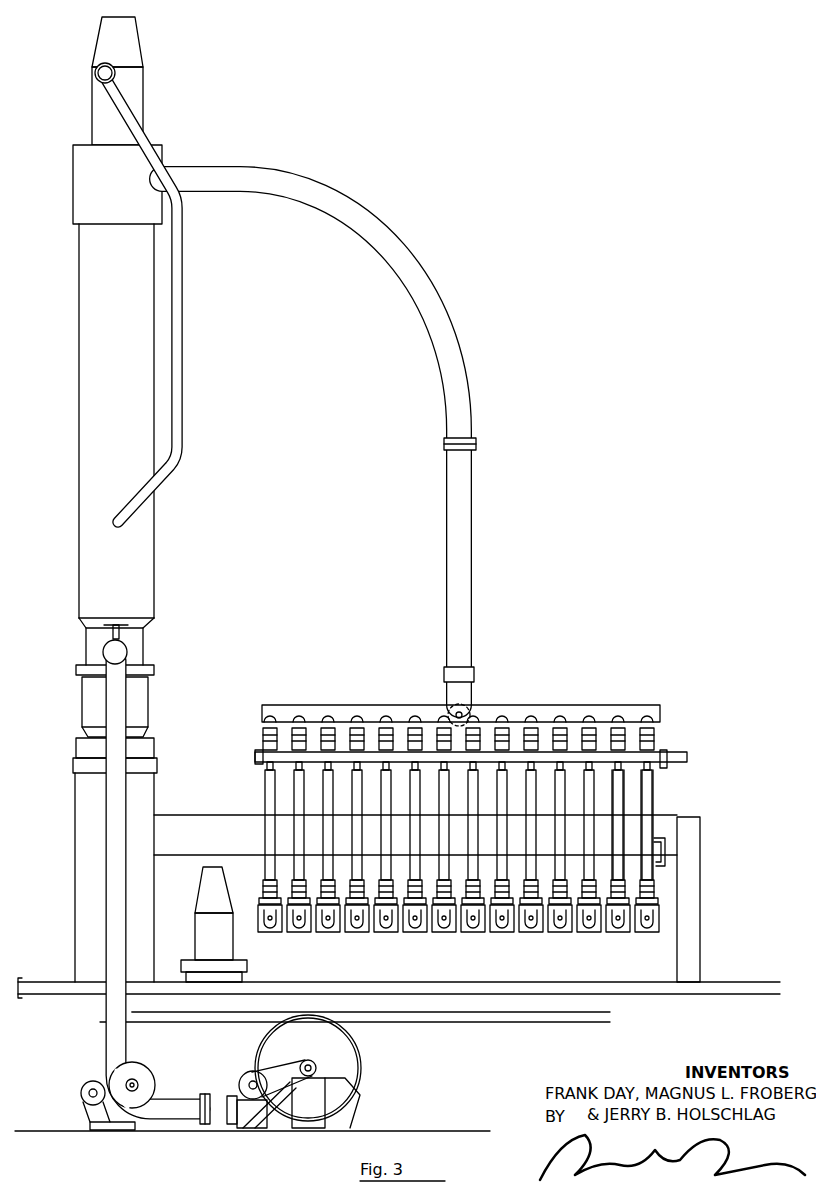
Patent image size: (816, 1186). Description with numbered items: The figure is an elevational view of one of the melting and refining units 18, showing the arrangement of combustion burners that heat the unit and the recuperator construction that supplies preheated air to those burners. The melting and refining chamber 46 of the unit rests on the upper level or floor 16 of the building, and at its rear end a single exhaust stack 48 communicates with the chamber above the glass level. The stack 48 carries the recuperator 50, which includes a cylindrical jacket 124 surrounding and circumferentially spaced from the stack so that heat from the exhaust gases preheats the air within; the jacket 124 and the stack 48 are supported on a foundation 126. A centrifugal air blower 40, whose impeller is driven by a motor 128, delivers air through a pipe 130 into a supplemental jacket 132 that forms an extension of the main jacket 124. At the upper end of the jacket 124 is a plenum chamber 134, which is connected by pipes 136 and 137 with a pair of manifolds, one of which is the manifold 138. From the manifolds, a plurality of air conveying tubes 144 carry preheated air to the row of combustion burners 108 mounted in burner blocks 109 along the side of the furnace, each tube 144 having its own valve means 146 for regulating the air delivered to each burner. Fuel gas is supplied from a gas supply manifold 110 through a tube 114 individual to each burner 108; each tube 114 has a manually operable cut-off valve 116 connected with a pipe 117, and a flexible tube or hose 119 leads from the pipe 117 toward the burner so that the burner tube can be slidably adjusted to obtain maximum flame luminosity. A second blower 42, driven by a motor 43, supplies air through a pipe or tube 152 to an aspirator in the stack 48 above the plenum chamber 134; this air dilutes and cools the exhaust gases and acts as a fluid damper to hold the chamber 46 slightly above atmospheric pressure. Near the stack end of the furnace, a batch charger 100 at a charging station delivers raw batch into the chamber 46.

The upper level or floor 16 is at (725, 981).
The melting and refining unit 18 is at (214, 795).
The air blower 40 is at (358, 1048).
The blower 42 is at (152, 1058).
The motor 43 is at (84, 1090).
The melting and refining chamber 46 is at (482, 964).
The exhaust stack 48 is at (145, 99).
The recuperator 50 is at (72, 315).
The batch charger 100 is at (237, 950).
The combustion burner 108 is at (358, 921).
The burner block 109 is at (301, 932).
The gas supply manifold 110 is at (678, 753).
The tube 114 is at (620, 776).
The manually operable cut-off valve 116 is at (655, 795).
The pipe 117 is at (647, 818).
The flexible tube or hose 119 is at (620, 875).
The jacket 124 is at (153, 516).
The foundation 126 is at (75, 921).
The motor 128 is at (245, 1075).
The pipe 130 is at (106, 1035).
The supplemental jacket 132 is at (149, 698).
The plenum chamber 134 is at (73, 183).
The pipe 136 is at (440, 298).
The pipe 137 is at (477, 712).
The manifold 138 is at (535, 708).
The air conveying tube 144 is at (296, 782).
The valve means 146 is at (257, 902).
The pipe or tube 152 is at (184, 319).